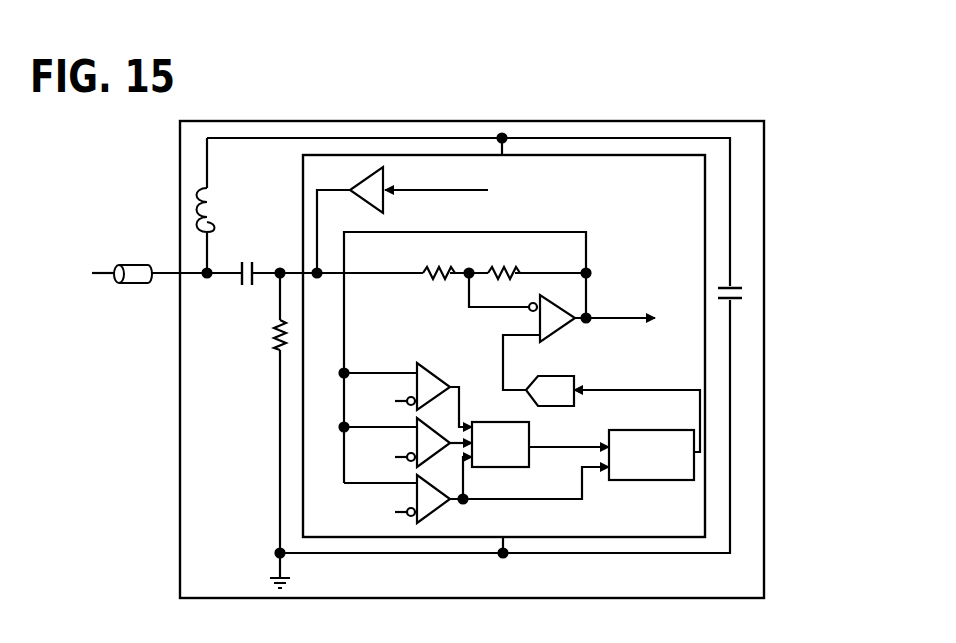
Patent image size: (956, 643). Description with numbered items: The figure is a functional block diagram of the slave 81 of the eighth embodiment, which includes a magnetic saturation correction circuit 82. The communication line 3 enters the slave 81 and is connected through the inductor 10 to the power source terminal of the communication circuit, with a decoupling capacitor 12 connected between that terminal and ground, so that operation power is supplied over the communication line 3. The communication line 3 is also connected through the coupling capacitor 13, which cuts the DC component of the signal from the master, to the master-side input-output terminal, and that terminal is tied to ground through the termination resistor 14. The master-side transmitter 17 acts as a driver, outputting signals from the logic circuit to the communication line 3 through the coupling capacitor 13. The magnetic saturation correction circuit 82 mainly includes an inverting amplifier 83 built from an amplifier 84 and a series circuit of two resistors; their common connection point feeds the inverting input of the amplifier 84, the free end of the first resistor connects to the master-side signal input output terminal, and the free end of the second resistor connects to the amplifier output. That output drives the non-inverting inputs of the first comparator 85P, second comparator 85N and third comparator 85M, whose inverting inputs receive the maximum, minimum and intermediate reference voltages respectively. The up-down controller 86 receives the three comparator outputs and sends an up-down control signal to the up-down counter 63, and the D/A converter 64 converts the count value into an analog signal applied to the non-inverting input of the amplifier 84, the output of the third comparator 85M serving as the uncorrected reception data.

The communication line 3 is at (133, 264).
The inductor 10 is at (217, 209).
The decoupling capacitor 12 is at (735, 286).
The coupling capacitor 13 is at (250, 262).
The termination resistor 14 is at (271, 333).
The master-side transmitter 17 is at (371, 172).
The up-down counter 63 is at (645, 430).
The D/A converter 64 is at (570, 375).
The slave 81 is at (765, 195).
The magnetic saturation correction circuit 82 is at (573, 210).
The inverting amplifier 83 is at (620, 256).
The amplifier 84 is at (558, 308).
The first comparator 85P is at (443, 370).
The second comparator 85N is at (430, 432).
The third comparator 85M is at (437, 508).
The up-down controller 86 is at (527, 421).